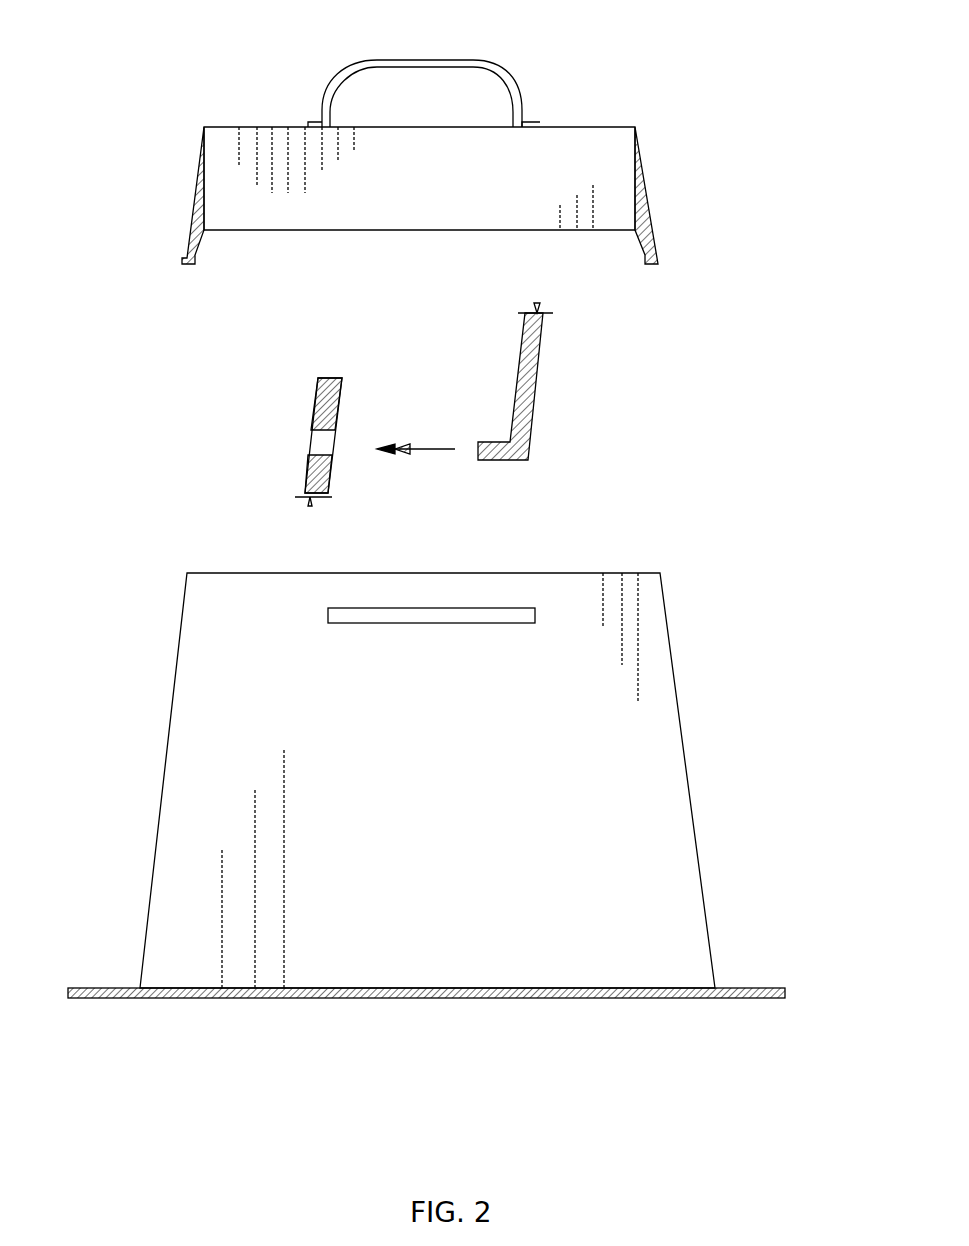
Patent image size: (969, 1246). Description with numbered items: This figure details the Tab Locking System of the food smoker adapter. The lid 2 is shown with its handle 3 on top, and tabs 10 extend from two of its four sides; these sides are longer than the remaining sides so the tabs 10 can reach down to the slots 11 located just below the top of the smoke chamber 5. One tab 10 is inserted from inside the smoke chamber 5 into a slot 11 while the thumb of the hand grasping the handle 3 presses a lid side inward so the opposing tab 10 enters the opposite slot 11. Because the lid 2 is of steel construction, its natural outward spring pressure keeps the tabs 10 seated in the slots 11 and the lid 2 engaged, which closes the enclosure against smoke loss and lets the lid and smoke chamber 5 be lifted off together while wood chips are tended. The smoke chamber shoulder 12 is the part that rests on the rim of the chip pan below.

The lid 2 is at (603, 116).
The handle 3 is at (505, 71).
The smoke chamber 5 is at (686, 705).
The tabs 10 is at (176, 258).
The slots 11 is at (306, 436).
The smoke chamber shoulder 12 is at (786, 984).